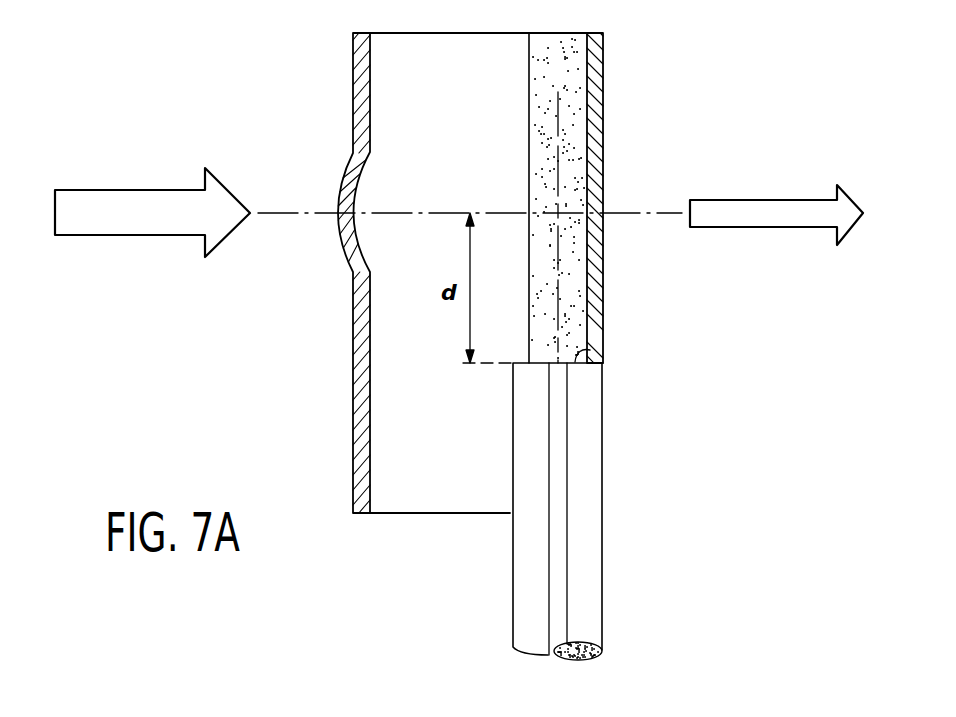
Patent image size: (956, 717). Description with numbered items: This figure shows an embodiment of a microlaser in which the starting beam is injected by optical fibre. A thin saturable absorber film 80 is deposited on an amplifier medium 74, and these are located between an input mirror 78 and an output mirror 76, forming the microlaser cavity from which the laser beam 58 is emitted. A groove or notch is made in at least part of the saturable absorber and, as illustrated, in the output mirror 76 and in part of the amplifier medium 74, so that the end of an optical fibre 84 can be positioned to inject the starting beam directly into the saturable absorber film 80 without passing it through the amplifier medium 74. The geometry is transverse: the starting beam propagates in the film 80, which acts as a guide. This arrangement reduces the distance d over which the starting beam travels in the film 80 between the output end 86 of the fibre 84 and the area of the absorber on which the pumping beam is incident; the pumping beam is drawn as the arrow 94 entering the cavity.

The input light beam 94 is at (114, 196).
The laser beam 58 is at (729, 207).
The input mirror 78 is at (357, 72).
The output mirror 76 is at (597, 75).
The saturable absorber film 80 is at (575, 273).
The output end of the fibre 86 is at (590, 350).
The optical fibre 84 is at (598, 581).
The amplifier medium 74 is at (443, 505).